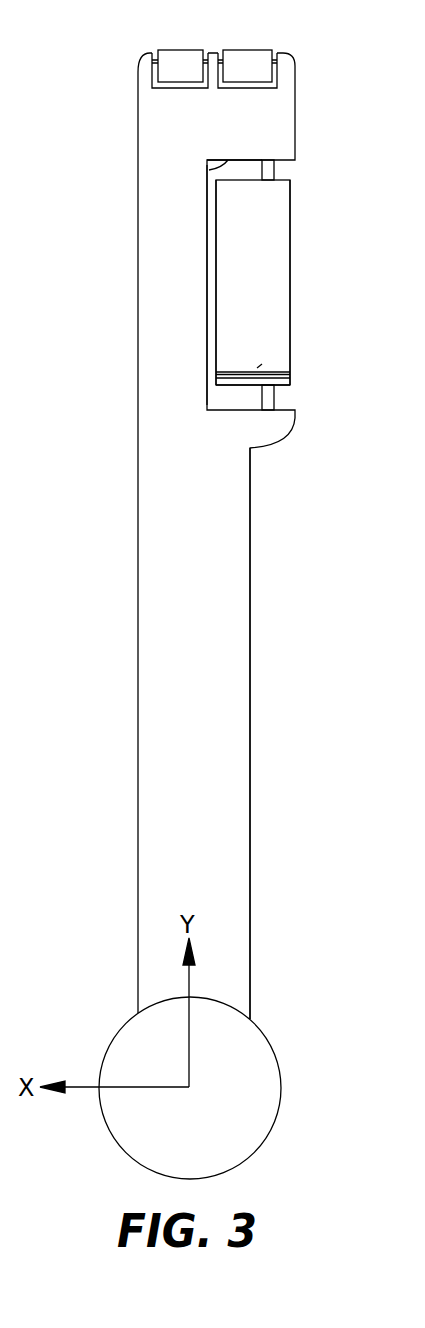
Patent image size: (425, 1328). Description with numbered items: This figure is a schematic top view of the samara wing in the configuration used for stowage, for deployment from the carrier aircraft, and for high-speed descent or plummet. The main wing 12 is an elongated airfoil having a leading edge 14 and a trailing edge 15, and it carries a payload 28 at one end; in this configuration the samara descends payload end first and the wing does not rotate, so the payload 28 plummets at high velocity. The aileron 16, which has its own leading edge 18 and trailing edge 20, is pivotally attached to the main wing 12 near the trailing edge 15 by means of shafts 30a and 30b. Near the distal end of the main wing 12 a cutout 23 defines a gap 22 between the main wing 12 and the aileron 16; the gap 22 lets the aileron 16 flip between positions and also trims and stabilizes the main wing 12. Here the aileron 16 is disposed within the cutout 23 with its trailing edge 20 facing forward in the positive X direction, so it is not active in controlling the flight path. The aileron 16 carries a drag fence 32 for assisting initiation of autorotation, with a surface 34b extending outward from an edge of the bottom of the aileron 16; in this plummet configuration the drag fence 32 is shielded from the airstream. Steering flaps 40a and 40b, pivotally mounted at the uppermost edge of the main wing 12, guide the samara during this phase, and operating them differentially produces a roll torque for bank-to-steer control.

The main wing 12 is at (200, 608).
The leading edge 14 is at (138, 784).
The trailing edge 15 is at (249, 790).
The aileron 16 is at (275, 245).
The leading edge 18 is at (290, 305).
The trailing edge 20 is at (216, 311).
The gap 22 is at (216, 260).
The cutout 23 is at (207, 170).
The payload 28 is at (190, 1088).
The shaft 30a is at (270, 170).
The shaft 30b is at (270, 397).
The drag fence 32 is at (257, 370).
The surface 34b is at (233, 372).
The steering flap 40a is at (182, 55).
The steering flap 40b is at (247, 55).